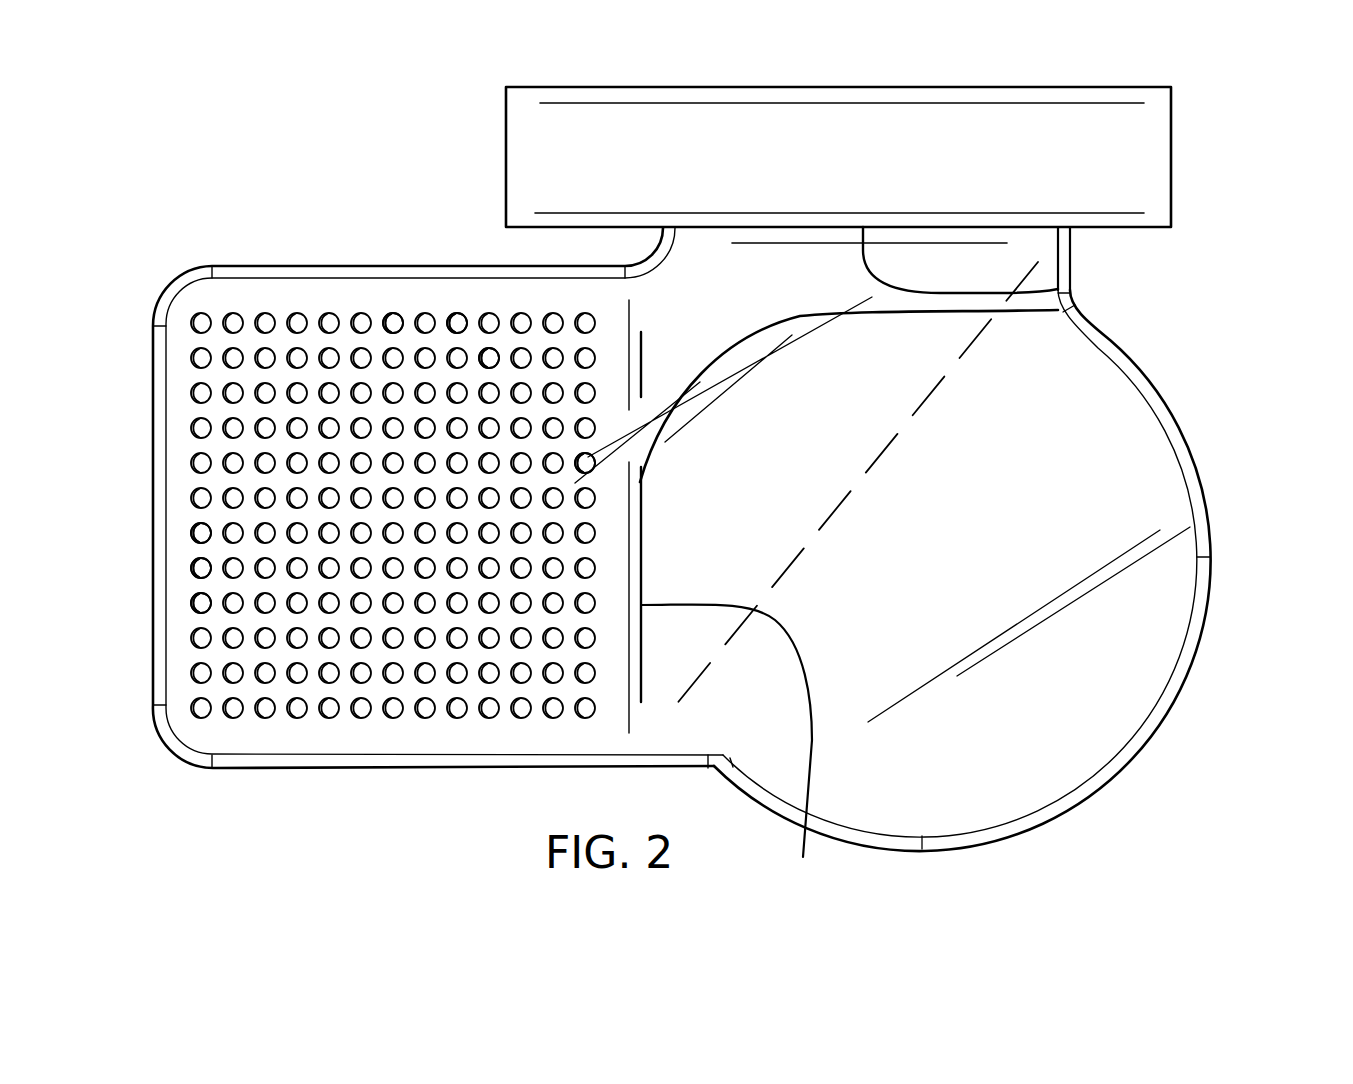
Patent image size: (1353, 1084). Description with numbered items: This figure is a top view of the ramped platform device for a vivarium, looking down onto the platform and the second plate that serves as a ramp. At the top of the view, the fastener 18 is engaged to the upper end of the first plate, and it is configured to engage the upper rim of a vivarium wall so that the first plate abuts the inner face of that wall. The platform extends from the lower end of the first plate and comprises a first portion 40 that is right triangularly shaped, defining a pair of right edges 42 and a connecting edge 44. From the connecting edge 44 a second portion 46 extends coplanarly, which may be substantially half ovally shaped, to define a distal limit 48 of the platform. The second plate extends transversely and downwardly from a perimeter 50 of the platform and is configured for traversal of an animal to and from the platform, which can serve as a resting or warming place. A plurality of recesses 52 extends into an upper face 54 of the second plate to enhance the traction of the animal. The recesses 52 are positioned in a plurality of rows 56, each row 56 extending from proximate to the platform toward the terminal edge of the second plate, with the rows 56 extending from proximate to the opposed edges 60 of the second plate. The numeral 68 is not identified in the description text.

The fastener 18 is at (1130, 122).
The first portion 40 is at (805, 482).
The right edges 42 is at (1075, 312).
The connecting edge 44 is at (818, 527).
The second portion 46 is at (1042, 588).
The distal limit 48 is at (1203, 632).
The perimeter 50 is at (830, 833).
The recesses 52 is at (585, 453).
The upper face 54 is at (403, 463).
The rows 56 is at (190, 603).
The opposed edges 60 is at (308, 757).
The plate rim 68 is at (152, 437).